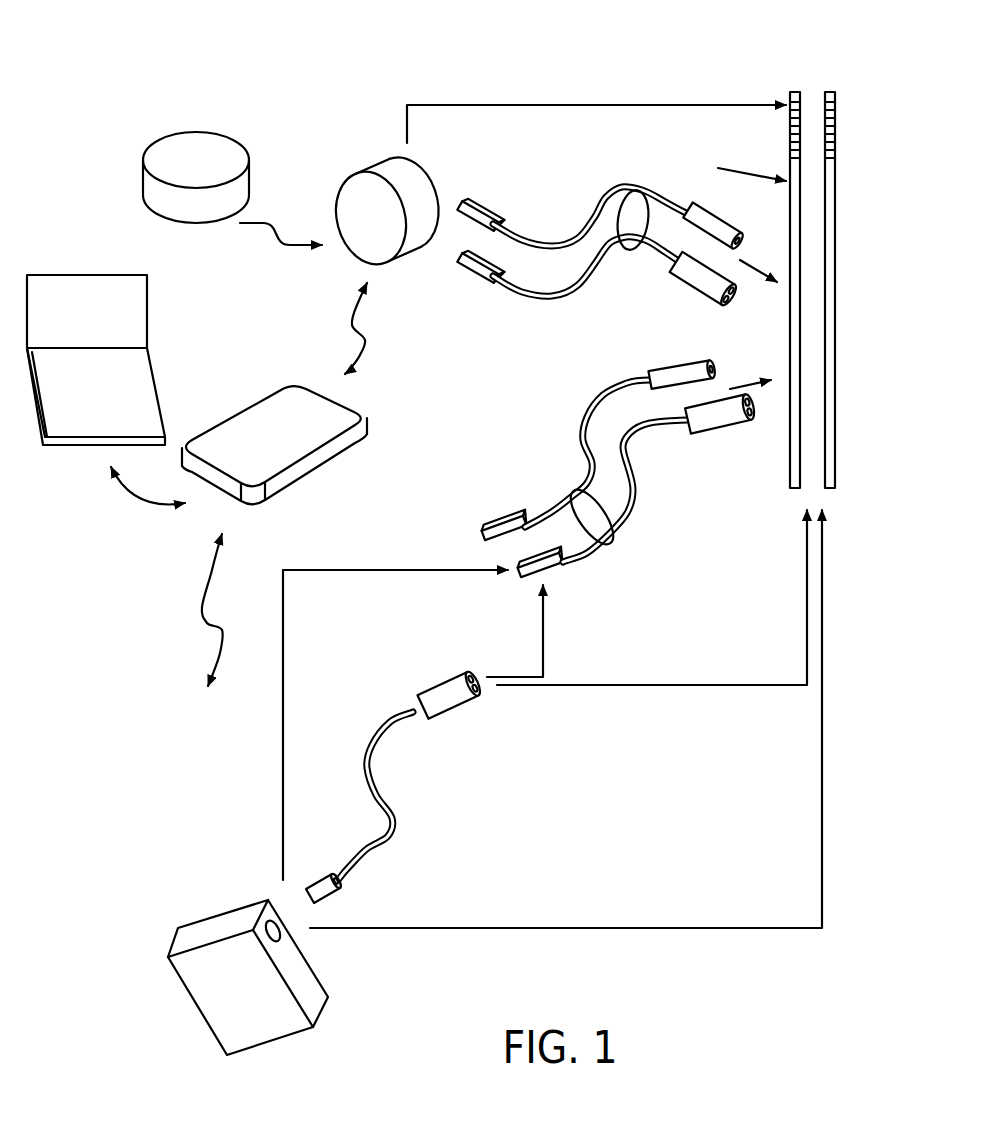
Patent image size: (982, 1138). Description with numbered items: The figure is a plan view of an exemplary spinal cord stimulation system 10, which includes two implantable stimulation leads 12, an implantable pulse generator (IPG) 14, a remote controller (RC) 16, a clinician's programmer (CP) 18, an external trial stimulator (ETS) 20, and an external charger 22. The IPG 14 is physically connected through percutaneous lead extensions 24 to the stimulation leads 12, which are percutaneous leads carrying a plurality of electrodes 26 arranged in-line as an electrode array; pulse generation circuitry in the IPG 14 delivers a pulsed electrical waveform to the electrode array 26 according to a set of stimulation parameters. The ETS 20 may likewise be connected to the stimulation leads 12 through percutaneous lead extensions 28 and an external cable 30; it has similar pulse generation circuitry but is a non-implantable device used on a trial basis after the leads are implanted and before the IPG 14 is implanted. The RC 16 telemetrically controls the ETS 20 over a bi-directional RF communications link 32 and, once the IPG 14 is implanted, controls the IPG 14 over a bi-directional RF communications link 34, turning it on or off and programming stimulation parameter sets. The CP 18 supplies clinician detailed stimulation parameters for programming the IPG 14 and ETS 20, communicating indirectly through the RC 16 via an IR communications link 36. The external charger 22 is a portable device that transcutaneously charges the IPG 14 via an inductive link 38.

The spinal cord stimulation (SCS) system 10 is at (569, 54).
The implantable stimulation leads 12 is at (814, 88).
The implantable pulse generator (IPG) 14 is at (367, 167).
The remote controller (RC) 16 is at (286, 400).
The clinician's programmer (CP) 18 is at (71, 290).
The external trial stimulator (ETS) 20 is at (218, 927).
The external charger 22 is at (196, 140).
The percutaneous lead extensions 24 is at (628, 186).
The electrodes 26 is at (837, 165).
The percutaneous lead extensions 28 is at (565, 494).
The external cable 30 is at (388, 725).
The bi-directional RF communications link 32 is at (213, 655).
The bi-directional RF communications link 34 is at (368, 343).
The IR communications link 36 is at (139, 493).
The inductive link 38 is at (258, 224).